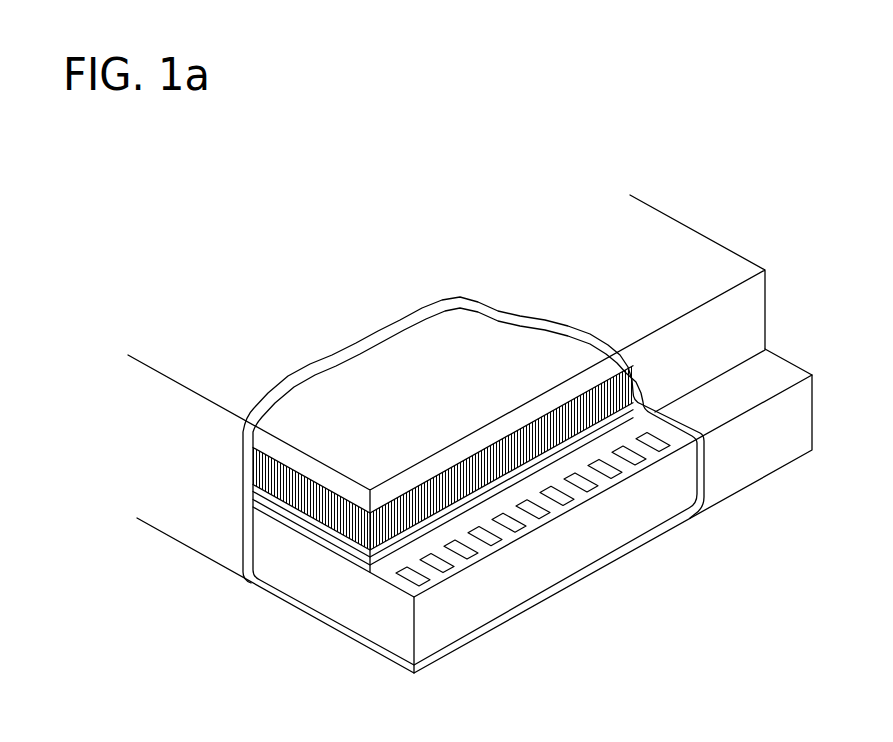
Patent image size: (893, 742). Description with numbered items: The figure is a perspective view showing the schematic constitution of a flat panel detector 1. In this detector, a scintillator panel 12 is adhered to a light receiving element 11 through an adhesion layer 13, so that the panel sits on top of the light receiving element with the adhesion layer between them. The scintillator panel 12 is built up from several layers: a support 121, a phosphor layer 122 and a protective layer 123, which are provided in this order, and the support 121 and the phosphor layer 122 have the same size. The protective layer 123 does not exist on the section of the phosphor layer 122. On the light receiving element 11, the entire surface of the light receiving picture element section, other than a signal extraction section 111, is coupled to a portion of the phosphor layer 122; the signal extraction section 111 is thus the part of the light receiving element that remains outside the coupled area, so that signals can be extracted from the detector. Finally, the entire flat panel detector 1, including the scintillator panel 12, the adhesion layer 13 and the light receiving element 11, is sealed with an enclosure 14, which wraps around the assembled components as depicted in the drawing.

The flat panel detector 1 is at (402, 189).
The light receiving element 11 is at (342, 602).
The signal extraction section 111 is at (562, 526).
The scintillator panel 12 is at (684, 267).
The support 121 is at (544, 356).
The phosphor layer 122 is at (598, 376).
The protective layer 123 is at (640, 372).
The adhesion layer 13 is at (622, 481).
The enclosure 14 is at (166, 377).